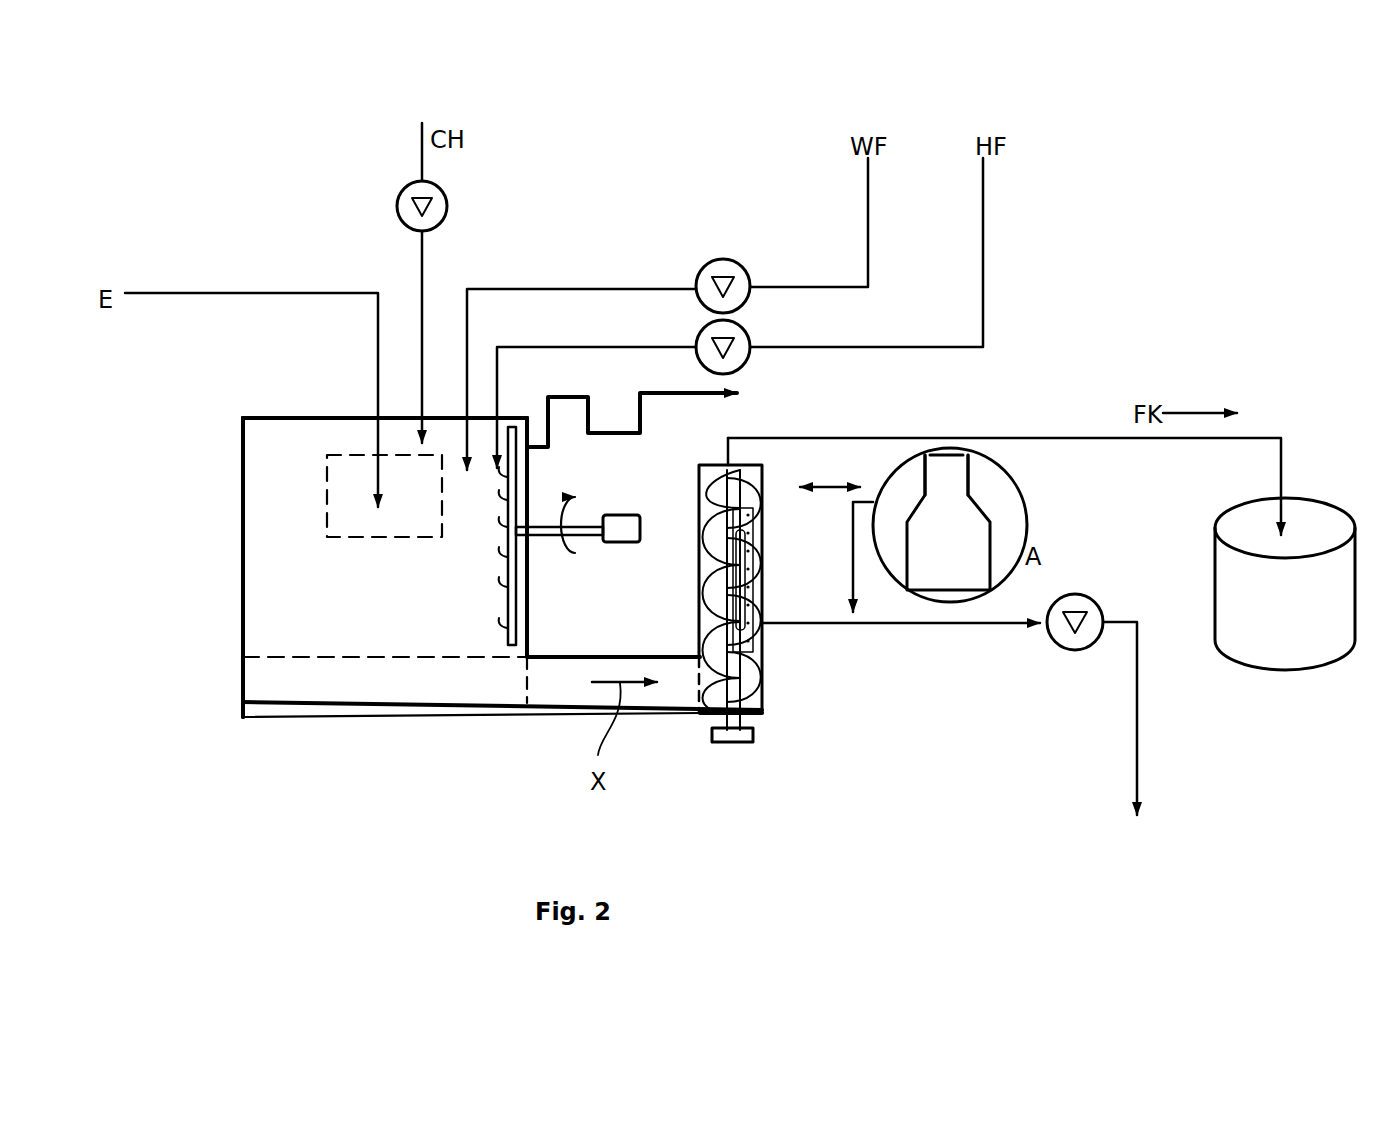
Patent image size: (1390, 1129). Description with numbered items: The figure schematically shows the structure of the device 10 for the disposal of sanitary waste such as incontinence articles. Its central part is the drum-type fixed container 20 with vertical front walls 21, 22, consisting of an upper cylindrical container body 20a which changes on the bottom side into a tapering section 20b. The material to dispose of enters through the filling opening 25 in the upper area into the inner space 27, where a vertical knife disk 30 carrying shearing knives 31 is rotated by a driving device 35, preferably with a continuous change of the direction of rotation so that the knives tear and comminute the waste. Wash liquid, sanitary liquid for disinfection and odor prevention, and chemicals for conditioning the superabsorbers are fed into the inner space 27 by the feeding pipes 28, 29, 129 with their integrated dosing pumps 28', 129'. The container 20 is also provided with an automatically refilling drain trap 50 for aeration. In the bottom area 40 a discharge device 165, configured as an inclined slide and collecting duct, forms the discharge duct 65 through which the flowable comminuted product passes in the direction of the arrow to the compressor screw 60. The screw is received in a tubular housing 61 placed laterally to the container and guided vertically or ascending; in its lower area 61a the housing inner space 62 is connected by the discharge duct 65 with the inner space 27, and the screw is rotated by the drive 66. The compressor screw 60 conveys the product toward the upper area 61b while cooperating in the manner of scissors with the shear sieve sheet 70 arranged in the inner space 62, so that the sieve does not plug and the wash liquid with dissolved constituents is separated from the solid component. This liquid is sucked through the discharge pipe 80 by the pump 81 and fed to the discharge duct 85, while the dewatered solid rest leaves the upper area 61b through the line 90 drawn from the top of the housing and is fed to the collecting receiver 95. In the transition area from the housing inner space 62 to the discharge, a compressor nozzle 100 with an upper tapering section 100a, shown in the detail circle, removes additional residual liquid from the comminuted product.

The device for the disposal of sanitary waste 10 is at (1165, 342).
The drum-type fixed container 20 is at (240, 560).
The upper cylindrical container body 20a is at (240, 478).
The tapering section 20b is at (240, 668).
The front wall 21 is at (240, 607).
The front wall 22 is at (528, 587).
The filling opening 25 is at (347, 473).
The inner space 27 is at (290, 535).
The feeding pipe 28 is at (667, 309).
The dosing pump 28' is at (749, 220).
The feeding pipe 29 is at (985, 242).
The knife disk 30 is at (518, 625).
The shearing knives 31 is at (505, 588).
The driving device 35 is at (618, 514).
The bottom area 40 is at (238, 687).
The drain trap 50 is at (618, 410).
The compressor screw 60 is at (753, 545).
The tubular housing 61 is at (700, 582).
The lower area of the housing 61a is at (700, 640).
The upper area of the housing 61b is at (702, 498).
The housing inner space 62 is at (755, 658).
The discharge duct 65 is at (500, 688).
The drive for the compressor screw 66 is at (733, 743).
The shear sieve sheet 70 is at (750, 602).
The discharge pipe 80 is at (853, 626).
The pump 81 is at (1075, 650).
The discharge duct 85 is at (1129, 746).
The discharge line 90 is at (1020, 438).
The collecting receiver 95 is at (1300, 622).
The compressor nozzle 100 is at (990, 507).
The upper tapering section 100a is at (955, 487).
The feeding pipe 129 is at (348, 330).
The dosing pump 129' is at (388, 177).
The discharge device 165 is at (387, 707).